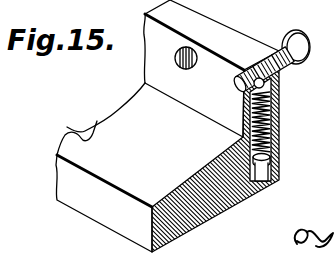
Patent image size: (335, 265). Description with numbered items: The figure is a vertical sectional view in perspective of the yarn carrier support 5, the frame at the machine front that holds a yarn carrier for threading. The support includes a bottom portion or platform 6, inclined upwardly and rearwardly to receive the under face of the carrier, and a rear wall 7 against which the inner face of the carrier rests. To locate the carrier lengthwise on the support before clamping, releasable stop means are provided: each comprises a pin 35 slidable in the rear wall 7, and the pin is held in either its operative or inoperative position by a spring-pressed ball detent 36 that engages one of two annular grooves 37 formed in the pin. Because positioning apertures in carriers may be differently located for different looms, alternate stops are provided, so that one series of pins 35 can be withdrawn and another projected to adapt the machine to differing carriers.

The yarn carrier support 5 is at (127, 55).
The bottom portion or platform 6 is at (99, 167).
The rear wall 7 is at (222, 30).
The pin 35 is at (186, 69).
The spring-pressed ball detent 36 is at (273, 92).
The annular grooves 37 is at (253, 67).